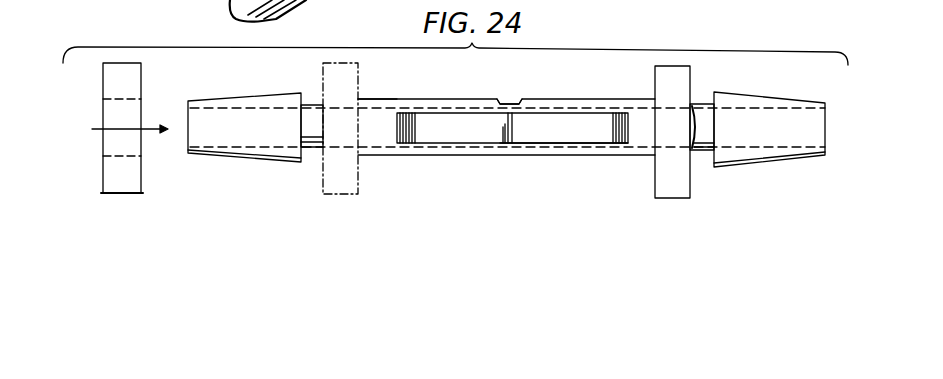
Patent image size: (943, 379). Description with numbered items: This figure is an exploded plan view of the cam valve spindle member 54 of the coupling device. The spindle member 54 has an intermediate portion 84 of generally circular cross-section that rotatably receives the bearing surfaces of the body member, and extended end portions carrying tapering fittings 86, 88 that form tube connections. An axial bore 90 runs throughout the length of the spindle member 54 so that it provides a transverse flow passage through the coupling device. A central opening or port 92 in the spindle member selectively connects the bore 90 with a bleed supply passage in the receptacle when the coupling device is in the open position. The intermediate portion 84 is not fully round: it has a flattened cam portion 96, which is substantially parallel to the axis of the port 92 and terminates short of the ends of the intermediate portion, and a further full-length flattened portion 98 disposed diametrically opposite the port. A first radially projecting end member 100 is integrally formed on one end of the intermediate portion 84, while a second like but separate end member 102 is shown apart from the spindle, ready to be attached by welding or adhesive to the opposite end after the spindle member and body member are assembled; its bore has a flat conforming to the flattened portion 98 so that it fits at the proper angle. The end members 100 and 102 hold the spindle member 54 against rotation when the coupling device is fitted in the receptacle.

The spindle member 54 is at (347, 227).
The intermediate portion 84 is at (588, 157).
The tapering fitting 86 is at (242, 157).
The tapering fitting 88 is at (765, 165).
The axial bore 90 is at (377, 118).
The central opening or port 92 is at (512, 104).
The flattened cam portion 96 is at (555, 133).
The flattened portion 98 is at (408, 157).
The first radially projecting end member 100 is at (675, 190).
The second end member 102 is at (123, 180).